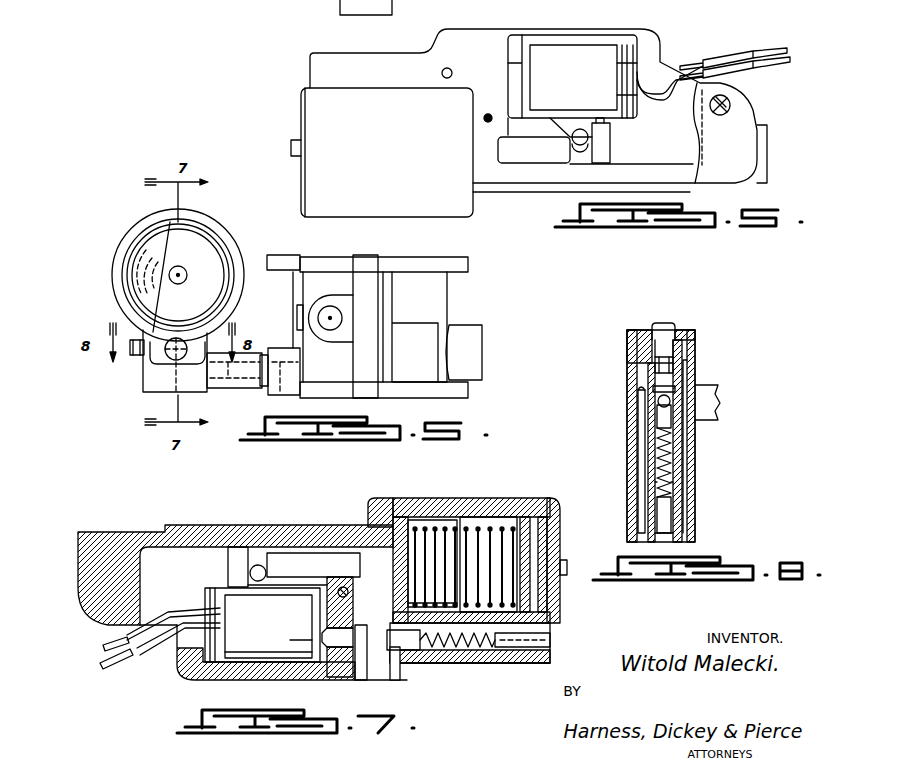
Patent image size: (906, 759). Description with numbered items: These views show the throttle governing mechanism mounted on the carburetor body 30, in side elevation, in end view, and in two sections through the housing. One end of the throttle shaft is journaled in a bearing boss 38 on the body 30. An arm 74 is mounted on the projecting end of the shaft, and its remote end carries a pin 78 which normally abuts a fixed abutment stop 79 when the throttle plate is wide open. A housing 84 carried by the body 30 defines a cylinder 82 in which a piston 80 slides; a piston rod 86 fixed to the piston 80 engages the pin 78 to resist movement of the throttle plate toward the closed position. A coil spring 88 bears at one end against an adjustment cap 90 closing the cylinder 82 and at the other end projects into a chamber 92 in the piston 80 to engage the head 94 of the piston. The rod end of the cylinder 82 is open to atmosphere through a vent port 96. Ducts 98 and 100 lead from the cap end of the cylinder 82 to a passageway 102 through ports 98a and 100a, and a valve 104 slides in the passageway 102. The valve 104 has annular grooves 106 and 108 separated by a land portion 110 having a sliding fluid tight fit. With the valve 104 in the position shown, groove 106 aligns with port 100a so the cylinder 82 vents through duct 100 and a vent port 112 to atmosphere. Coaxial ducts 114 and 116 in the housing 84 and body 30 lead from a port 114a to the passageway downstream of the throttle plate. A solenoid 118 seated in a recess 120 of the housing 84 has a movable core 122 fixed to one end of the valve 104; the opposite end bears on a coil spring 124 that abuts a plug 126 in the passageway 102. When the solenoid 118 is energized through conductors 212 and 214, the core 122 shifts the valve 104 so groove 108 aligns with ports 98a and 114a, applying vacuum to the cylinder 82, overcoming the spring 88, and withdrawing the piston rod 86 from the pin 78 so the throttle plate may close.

In FIG. 6, the body 30 is at (392, 8).
In FIG. 5, the body 30 is at (436, 298).
In FIG. 5, the bearing boss 38 is at (467, 342).
In FIG. 6, the arm 74 is at (567, 127).
In FIG. 7, the arm 74 is at (273, 585).
In FIG. 6, the pin 78 is at (580, 146).
In FIG. 7, the pin 78 is at (250, 573).
In FIG. 6, the abutment stop 79 is at (610, 137).
In FIG. 7, the abutment stop 79 is at (240, 550).
In FIG. 5, the piston 80 is at (203, 278).
In FIG. 7, the piston 80 is at (417, 517).
In FIG. 7, the cylinder 82 is at (487, 510).
In FIG. 6, the housing 84 is at (332, 110).
In FIG. 5, the housing 84 is at (220, 232).
In FIG. 7, the housing 84 is at (385, 500).
In FIG. 6, the piston rod 86 is at (528, 152).
In FIG. 5, the piston rod 86 is at (181, 265).
In FIG. 7, the piston rod 86 is at (285, 553).
In FIG. 7, the coil spring 88 is at (515, 527).
In FIG. 6, the adjustment cap 90 is at (300, 127).
In FIG. 7, the adjustment cap 90 is at (560, 540).
In FIG. 7, the chamber 92 is at (453, 515).
In FIG. 7, the head 94 is at (370, 520).
In FIG. 5, the vent port 96 is at (123, 276).
In FIG. 5, the duct 98 is at (128, 360).
In FIG. 8, the duct 98 is at (642, 440).
In FIG. 5, the port 98a is at (134, 380).
In FIG. 8, the port 98a is at (645, 405).
In FIG. 5, the duct 100 is at (188, 393).
In FIG. 8, the duct 100 is at (682, 447).
In FIG. 5, the port 100a is at (184, 290).
In FIG. 8, the port 100a is at (673, 367).
In FIG. 8, the passageway 102 is at (655, 483).
In FIG. 7, the passageway 102 is at (477, 647).
In FIG. 8, the valve 104 is at (664, 423).
In FIG. 7, the valve 104 is at (410, 642).
In FIG. 8, the annular groove 106 is at (655, 370).
In FIG. 7, the annular groove 106 is at (323, 626).
In FIG. 8, the annular groove 108 is at (653, 389).
In FIG. 7, the annular groove 108 is at (410, 603).
In FIG. 7, the land portion 110 is at (373, 623).
In FIG. 8, the vent port 112 is at (648, 330).
In FIG. 5, the duct 114 is at (236, 395).
In FIG. 8, the duct 114 is at (718, 387).
In FIG. 7, the duct 114 is at (395, 650).
In FIG. 7, the port 114a is at (380, 680).
In FIG. 5, the duct 116 is at (290, 395).
In FIG. 6, the solenoid 118 is at (570, 55).
In FIG. 7, the solenoid 118 is at (262, 625).
In FIG. 7, the recess 120 is at (250, 655).
In FIG. 7, the movable core 122 is at (305, 642).
In FIG. 8, the coil spring 124 is at (672, 462).
In FIG. 7, the coil spring 124 is at (500, 650).
In FIG. 8, the plug 126 is at (662, 517).
In FIG. 7, the plug 126 is at (550, 642).
In FIG. 6, the conductor 212 is at (773, 50).
In FIG. 7, the conductor 212 is at (128, 650).
In FIG. 6, the conductor 214 is at (778, 63).
In FIG. 7, the conductor 214 is at (88, 655).